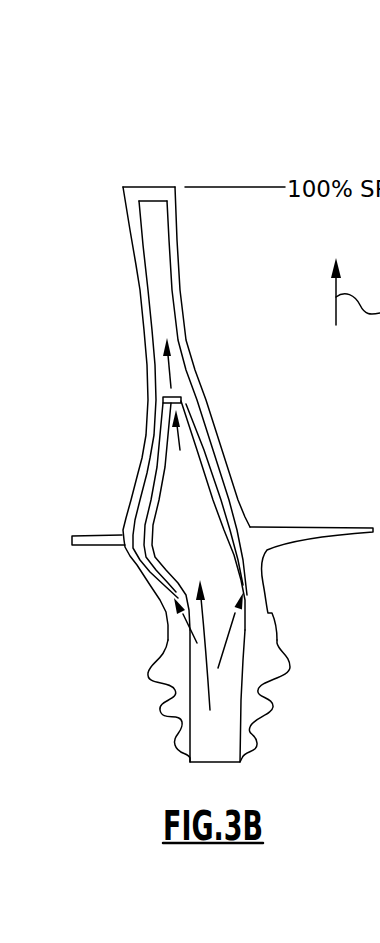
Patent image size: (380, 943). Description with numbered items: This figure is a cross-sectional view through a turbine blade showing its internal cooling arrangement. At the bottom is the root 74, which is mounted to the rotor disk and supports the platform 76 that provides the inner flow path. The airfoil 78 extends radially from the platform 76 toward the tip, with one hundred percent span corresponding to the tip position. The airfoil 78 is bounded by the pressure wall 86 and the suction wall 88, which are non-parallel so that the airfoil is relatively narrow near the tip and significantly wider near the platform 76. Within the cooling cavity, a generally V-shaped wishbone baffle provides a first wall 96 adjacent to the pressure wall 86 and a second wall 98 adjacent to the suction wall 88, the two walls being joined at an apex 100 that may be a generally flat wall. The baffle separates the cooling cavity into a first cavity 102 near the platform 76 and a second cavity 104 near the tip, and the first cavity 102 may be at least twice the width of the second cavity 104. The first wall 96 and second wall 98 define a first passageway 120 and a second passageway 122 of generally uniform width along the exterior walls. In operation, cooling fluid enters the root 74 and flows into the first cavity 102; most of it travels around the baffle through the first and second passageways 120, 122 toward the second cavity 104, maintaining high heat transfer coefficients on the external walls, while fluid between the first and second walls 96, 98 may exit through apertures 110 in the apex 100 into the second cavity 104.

The root 74 is at (160, 668).
The platform 76 is at (320, 530).
The airfoil 78 is at (207, 239).
The pressure wall 86 is at (212, 418).
The suction wall 88 is at (148, 392).
The first wall 96 is at (207, 480).
The second wall 98 is at (160, 487).
The apex 100 is at (180, 397).
The first cavity 102 is at (212, 552).
The second cavity 104 is at (162, 308).
The apertures 110 is at (168, 397).
The first passageway 120 is at (226, 510).
The second passageway 122 is at (140, 560).